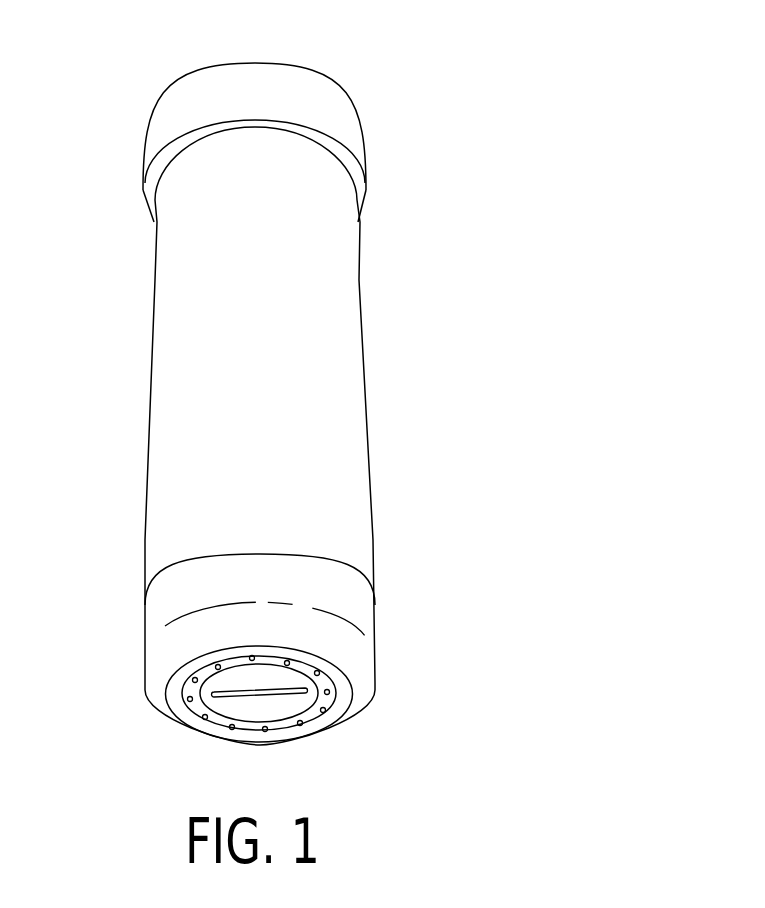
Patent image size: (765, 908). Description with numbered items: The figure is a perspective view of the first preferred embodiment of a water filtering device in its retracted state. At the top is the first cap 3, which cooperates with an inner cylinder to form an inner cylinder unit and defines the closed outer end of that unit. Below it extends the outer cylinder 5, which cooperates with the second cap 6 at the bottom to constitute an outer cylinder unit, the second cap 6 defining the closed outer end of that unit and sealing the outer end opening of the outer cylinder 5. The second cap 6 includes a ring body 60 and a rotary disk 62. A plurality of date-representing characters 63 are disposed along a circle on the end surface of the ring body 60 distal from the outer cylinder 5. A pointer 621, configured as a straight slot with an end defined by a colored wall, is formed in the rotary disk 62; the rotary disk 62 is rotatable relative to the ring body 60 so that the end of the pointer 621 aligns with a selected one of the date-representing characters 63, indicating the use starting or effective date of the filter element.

The first cap 3 is at (303, 95).
The outer cylinder 5 is at (312, 347).
The second cap 6 is at (378, 640).
The ring body 60 is at (340, 693).
The rotary disk 62 is at (285, 703).
The pointer 621 is at (242, 692).
The date-representing characters 63 is at (187, 688).